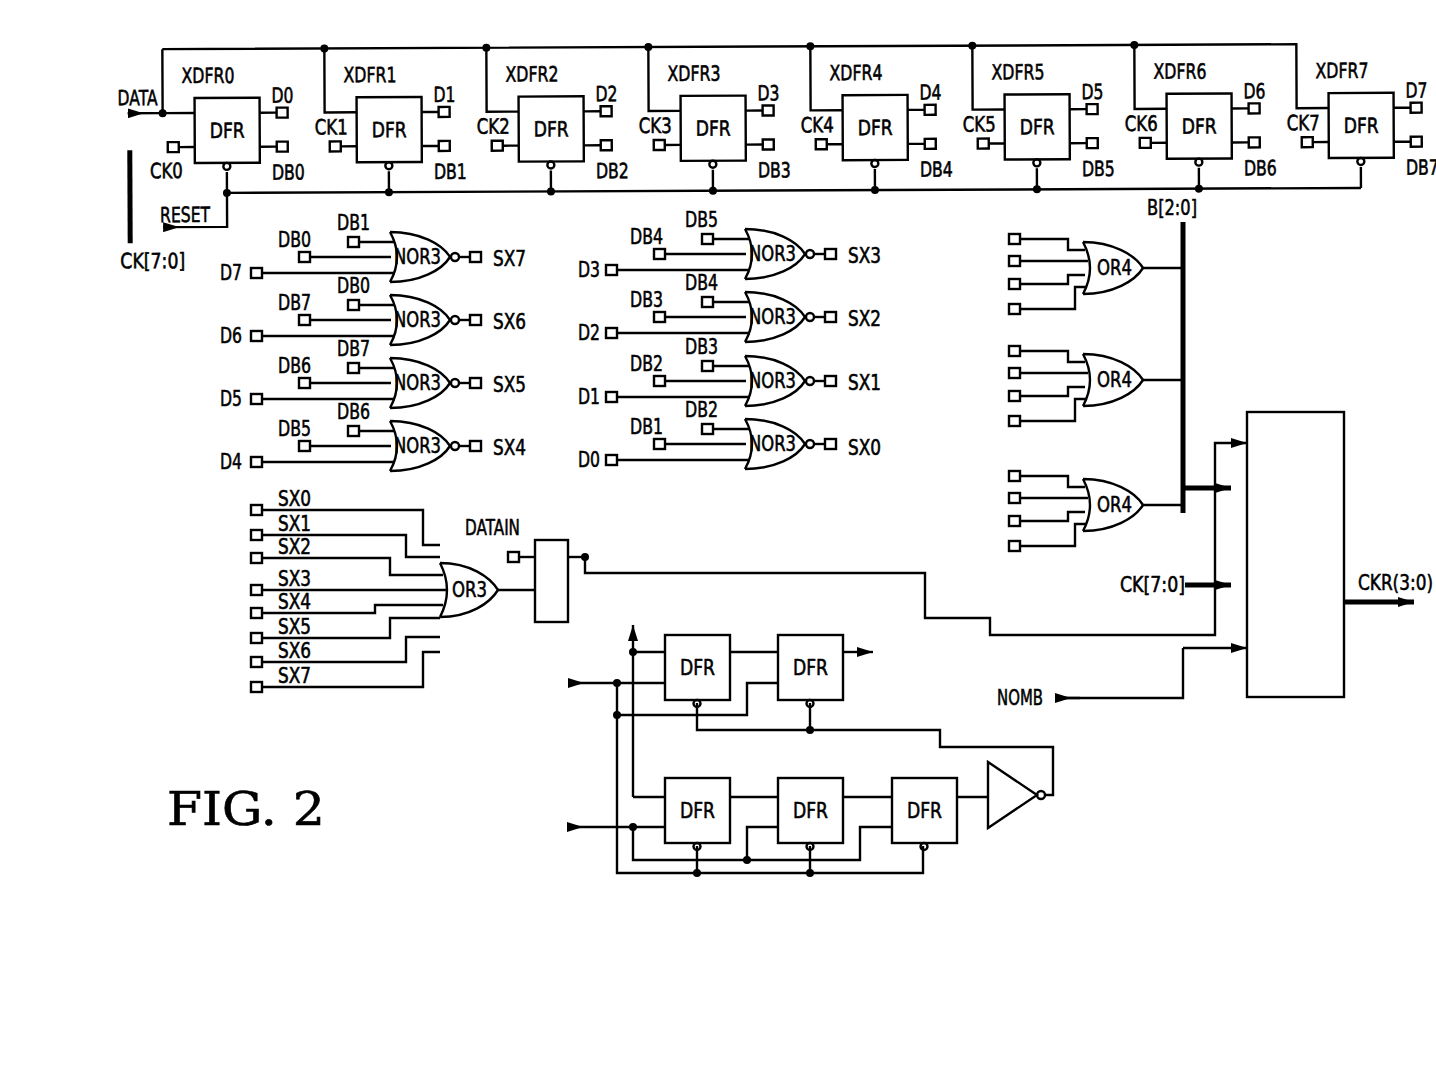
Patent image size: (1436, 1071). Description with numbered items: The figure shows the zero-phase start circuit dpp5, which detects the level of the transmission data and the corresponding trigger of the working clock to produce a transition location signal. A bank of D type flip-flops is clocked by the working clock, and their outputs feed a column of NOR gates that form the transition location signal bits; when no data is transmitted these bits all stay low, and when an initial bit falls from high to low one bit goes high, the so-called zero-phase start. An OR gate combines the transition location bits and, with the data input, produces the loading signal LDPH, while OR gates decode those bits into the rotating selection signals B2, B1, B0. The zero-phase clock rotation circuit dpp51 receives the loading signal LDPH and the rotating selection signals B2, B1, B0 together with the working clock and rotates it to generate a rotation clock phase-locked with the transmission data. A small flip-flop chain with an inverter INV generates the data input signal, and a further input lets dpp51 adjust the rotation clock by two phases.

The zero-phase start circuit dpp5 is at (851, 751).
The zero-phase clock rotation circuit dpp51 is at (1295, 554).
The rotating selection signal B2 is at (1096, 265).
The rotating selection signal B1 is at (1096, 377).
The rotating selection signal B0 is at (1096, 502).
The loading signal LDPH is at (585, 557).
The inverter INV is at (1016, 795).